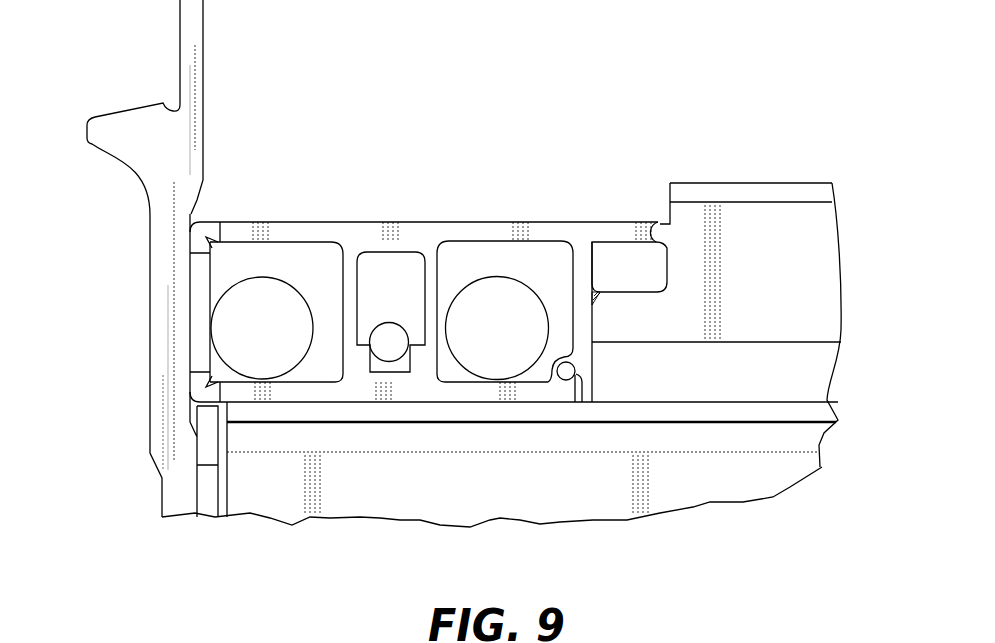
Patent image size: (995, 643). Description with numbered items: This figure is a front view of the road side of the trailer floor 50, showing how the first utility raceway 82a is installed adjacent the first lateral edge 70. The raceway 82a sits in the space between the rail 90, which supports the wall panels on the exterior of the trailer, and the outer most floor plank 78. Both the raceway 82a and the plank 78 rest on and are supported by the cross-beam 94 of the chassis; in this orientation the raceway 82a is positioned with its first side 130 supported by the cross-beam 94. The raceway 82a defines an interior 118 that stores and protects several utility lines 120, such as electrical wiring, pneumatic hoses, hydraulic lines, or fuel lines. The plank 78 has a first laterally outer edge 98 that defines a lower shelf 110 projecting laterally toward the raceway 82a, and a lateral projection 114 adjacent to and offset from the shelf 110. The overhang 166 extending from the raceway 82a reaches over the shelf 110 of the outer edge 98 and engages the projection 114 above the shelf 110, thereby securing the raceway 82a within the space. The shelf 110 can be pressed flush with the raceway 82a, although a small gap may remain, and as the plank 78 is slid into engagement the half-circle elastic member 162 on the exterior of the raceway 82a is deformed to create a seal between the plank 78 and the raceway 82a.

The floor 50 is at (440, 46).
The first lateral edge 70 is at (123, 321).
The floor plank 78 is at (821, 320).
The first utility raceway 82a is at (418, 222).
The rail 90 is at (150, 166).
The cross-beam 94 is at (580, 505).
The first laterally outer edge 98 is at (682, 127).
The shelf 110 is at (679, 349).
The lateral projection 114 is at (666, 222).
The interior 118 is at (279, 271).
The utility line 120 is at (322, 272).
The first side 130 is at (364, 392).
The elastic member 162 is at (597, 297).
The overhang 166 is at (603, 230).